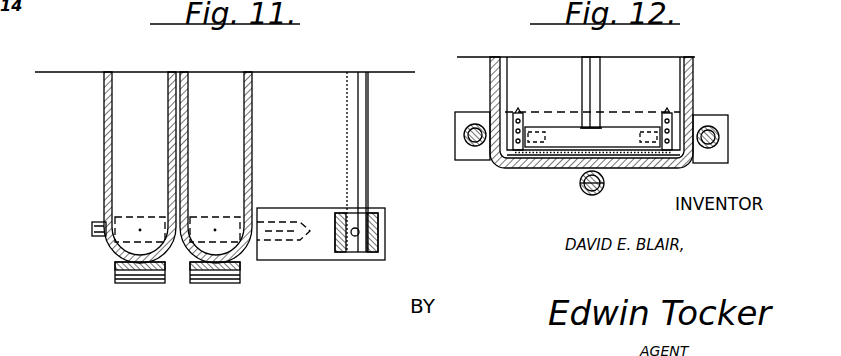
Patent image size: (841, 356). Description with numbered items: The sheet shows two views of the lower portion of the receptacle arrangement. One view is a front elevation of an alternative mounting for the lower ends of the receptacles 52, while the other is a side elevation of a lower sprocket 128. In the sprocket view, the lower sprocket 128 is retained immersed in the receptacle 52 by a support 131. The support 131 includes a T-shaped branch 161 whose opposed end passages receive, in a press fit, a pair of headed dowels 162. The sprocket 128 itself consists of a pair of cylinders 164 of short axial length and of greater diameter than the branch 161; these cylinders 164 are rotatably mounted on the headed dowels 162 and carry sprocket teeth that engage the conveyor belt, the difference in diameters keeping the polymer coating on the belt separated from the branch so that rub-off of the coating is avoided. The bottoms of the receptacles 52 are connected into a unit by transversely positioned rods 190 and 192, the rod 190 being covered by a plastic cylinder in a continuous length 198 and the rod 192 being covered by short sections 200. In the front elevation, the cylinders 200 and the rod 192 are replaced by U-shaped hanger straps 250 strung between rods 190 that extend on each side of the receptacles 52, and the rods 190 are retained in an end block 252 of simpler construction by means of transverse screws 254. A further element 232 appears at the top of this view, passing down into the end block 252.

In FIG. 11, the receptacle 52 is at (252, 140).
In FIG. 12, the receptacle 52 is at (694, 85).
In FIG. 12, the lower sprocket 128 is at (512, 106).
In FIG. 12, the support 131 is at (600, 80).
In FIG. 12, the T-shaped branch 161 is at (552, 148).
In FIG. 12, the headed dowel 162 is at (497, 165).
In FIG. 12, the cylinder 164 is at (520, 113).
In FIG. 11, the rod 190 is at (92, 238).
In FIG. 12, the rod 190 is at (470, 146).
In FIG. 12, the rod 192 is at (604, 185).
In FIG. 12, the continuous length plastic cylinder 198 is at (584, 192).
In FIG. 12, the short section plastic cylinder 200 is at (464, 136).
In FIG. 11, the rod 232 is at (345, 88).
In FIG. 11, the U-shaped hanger strap 250 is at (222, 270).
In FIG. 11, the end block 252 is at (385, 250).
In FIG. 11, the transverse screw 254 is at (286, 208).